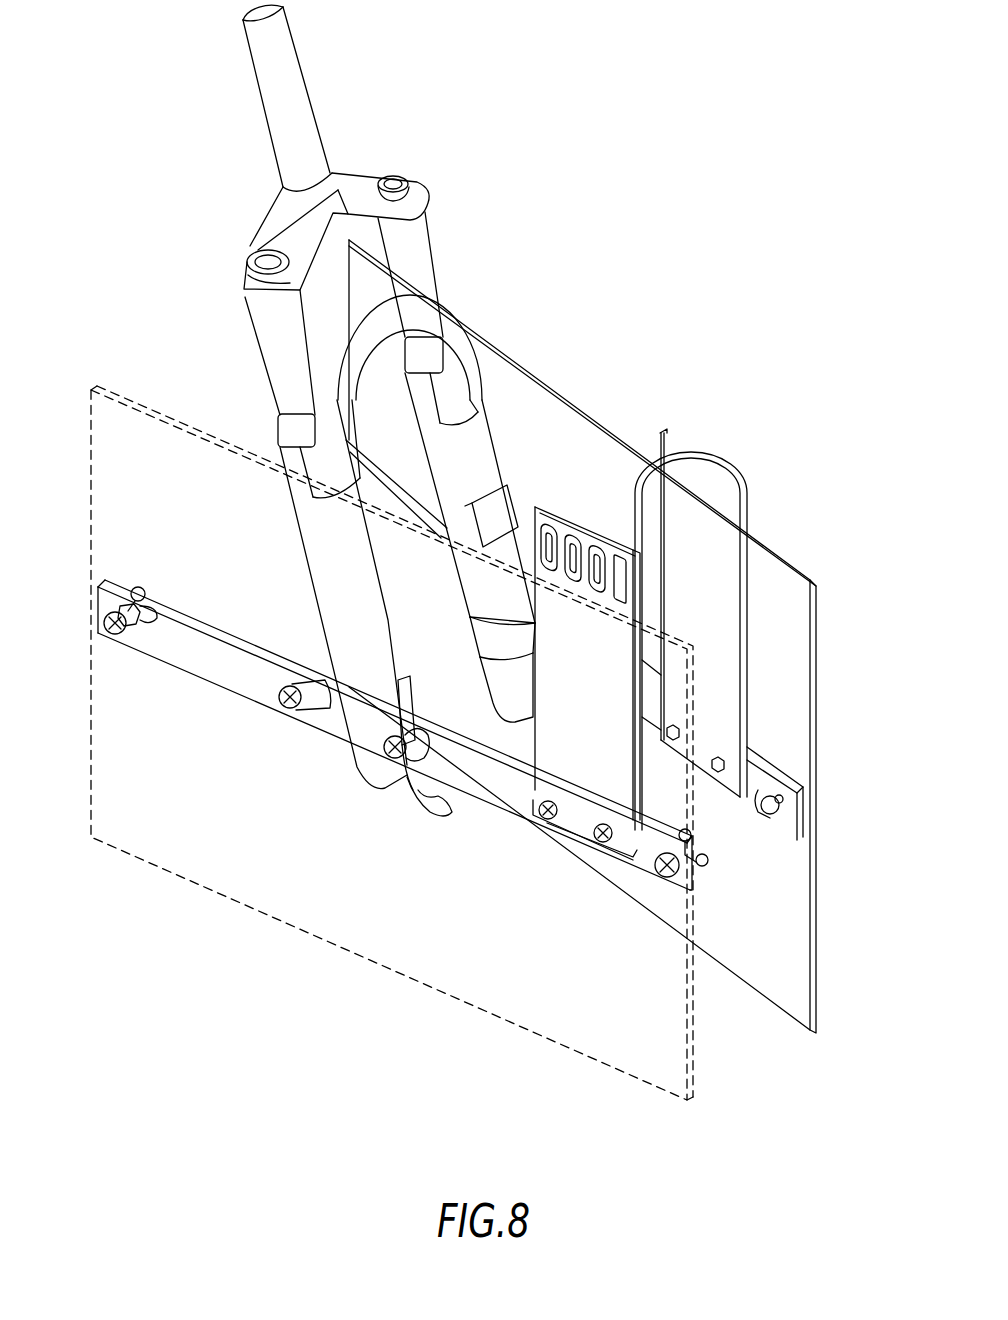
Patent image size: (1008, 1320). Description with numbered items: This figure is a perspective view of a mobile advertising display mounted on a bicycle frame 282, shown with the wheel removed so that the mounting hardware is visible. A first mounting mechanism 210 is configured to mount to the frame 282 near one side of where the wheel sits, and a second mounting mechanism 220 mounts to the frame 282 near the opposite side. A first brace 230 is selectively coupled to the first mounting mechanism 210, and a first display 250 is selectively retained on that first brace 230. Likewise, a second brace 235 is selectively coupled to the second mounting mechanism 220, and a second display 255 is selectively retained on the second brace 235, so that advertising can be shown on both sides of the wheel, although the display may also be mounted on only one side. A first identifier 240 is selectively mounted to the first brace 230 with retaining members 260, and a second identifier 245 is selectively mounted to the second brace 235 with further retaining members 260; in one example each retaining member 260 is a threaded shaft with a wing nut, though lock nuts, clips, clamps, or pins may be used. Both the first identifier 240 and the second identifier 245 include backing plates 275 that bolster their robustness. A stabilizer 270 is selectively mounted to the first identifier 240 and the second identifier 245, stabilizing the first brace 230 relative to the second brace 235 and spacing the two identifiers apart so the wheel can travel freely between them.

The first mounting mechanism 210 is at (422, 686).
The second mounting mechanism 220 is at (450, 625).
The first brace 230 is at (195, 660).
The second brace 235 is at (782, 832).
The first identifier 240 is at (558, 514).
The second identifier 245 is at (668, 432).
The first display 250 is at (98, 838).
The second display 255 is at (815, 578).
The retaining members 260 is at (110, 633).
The stabilizer 270 is at (735, 453).
The backing plates 275 is at (723, 682).
The frame 282 is at (430, 258).